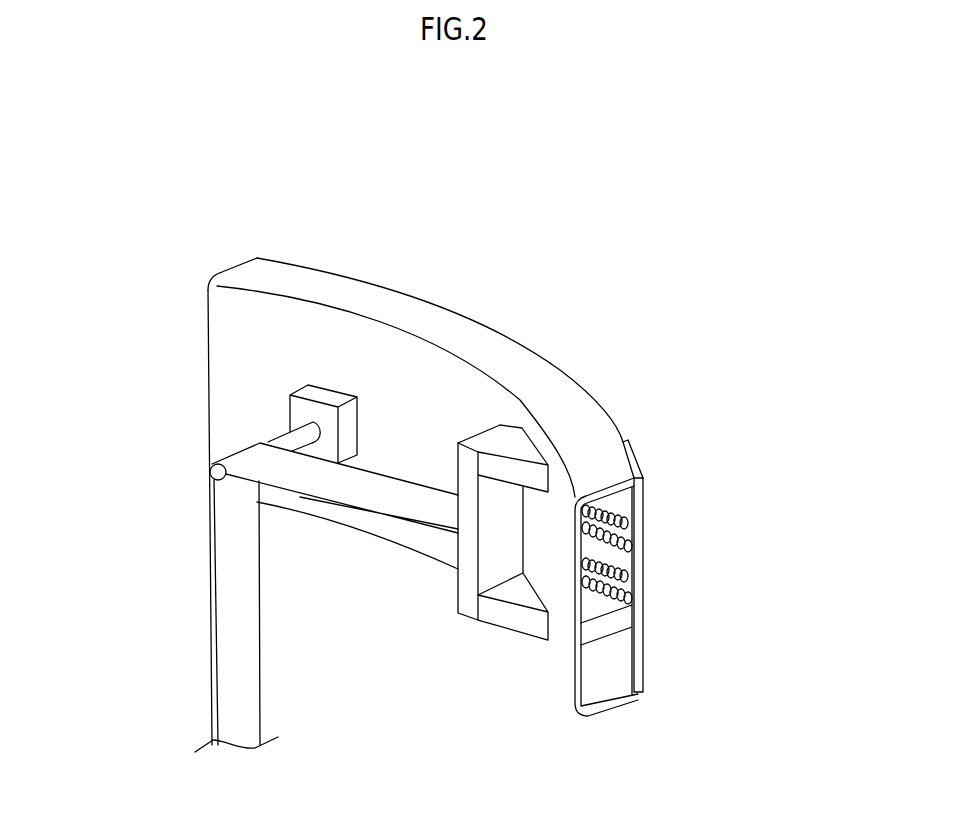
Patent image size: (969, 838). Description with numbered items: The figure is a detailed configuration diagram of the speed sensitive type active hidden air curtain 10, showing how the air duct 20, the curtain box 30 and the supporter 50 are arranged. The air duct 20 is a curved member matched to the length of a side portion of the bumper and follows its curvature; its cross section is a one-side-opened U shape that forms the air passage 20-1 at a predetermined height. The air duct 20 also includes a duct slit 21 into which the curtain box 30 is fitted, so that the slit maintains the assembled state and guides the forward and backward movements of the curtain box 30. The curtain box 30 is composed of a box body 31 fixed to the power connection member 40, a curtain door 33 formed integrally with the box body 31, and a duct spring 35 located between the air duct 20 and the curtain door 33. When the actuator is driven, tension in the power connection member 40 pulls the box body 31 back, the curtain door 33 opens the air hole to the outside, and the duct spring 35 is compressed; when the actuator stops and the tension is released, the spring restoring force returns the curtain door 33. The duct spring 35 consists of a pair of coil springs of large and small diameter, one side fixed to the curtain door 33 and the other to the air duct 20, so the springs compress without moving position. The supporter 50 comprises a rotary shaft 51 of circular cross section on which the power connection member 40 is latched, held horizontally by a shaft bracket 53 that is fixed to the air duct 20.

The speed sensitive type active hidden air curtain 10 is at (666, 371).
The air duct 20 is at (246, 279).
The air passage 20-1 is at (607, 687).
The duct slit 21 is at (530, 598).
The curtain box 30 is at (682, 556).
The box body 31 is at (513, 447).
The curtain door 33 is at (710, 585).
The duct spring 35 is at (618, 521).
The power connection member 40 is at (231, 673).
The supporter 50 is at (253, 477).
The rotary shaft 51 is at (213, 478).
The shaft bracket 53 is at (302, 408).